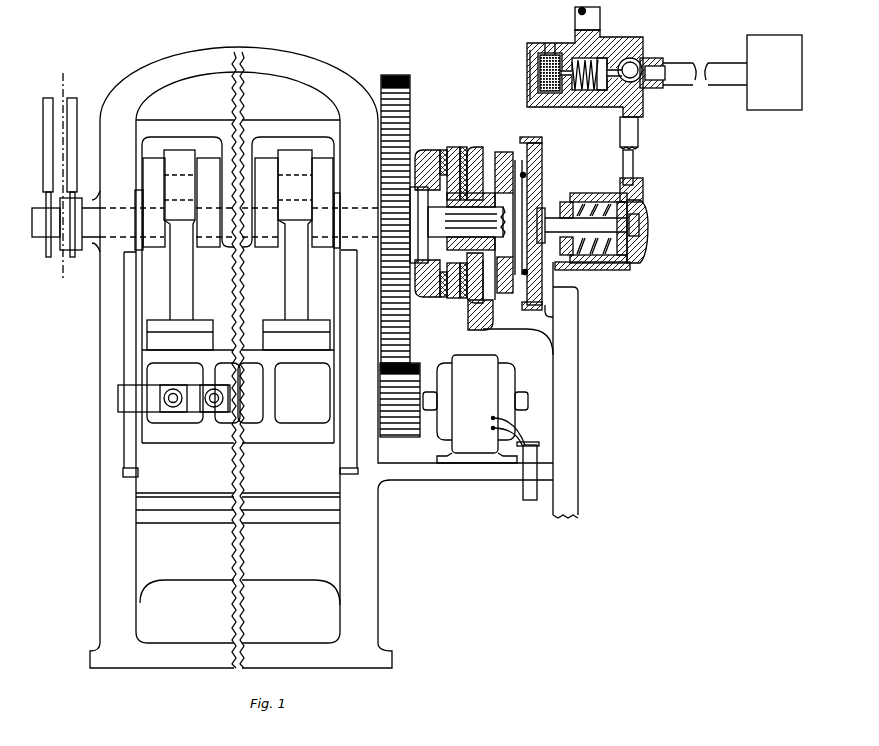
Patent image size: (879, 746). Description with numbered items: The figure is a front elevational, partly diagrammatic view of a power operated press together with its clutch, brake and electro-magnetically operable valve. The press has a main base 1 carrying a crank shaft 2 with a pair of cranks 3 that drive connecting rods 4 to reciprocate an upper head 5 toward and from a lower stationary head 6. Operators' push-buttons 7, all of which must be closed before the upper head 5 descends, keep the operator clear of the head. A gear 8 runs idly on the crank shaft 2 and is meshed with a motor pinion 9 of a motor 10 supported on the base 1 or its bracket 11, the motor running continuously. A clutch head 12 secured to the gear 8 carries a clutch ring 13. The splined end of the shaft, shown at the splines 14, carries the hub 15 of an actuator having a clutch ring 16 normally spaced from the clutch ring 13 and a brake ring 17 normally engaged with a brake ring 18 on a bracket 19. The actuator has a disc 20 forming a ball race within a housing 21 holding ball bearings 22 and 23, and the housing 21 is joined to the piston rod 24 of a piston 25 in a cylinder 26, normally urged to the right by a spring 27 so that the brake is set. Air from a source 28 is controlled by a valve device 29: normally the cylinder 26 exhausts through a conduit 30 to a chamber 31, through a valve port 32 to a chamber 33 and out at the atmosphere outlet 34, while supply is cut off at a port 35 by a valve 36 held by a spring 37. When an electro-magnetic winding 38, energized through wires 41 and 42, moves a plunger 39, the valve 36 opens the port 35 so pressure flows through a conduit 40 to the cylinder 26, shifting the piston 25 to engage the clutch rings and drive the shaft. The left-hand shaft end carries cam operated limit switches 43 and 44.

The main base 1 is at (377, 557).
The crank shaft 2 is at (58, 76).
The cranks 3 is at (196, 189).
The connecting rods 4 is at (193, 277).
The upper head 5 is at (215, 438).
The lower stationary head 6 is at (275, 496).
The operators' push-buttons 7 is at (175, 389).
The gear 8 is at (410, 93).
The motor pinion 9 is at (404, 436).
The motor 10 is at (475, 409).
The bracket 11 is at (487, 477).
The clutch head 12 is at (422, 150).
The clutch ring 13 is at (442, 150).
The splines 14 is at (447, 222).
The hub 15 is at (493, 282).
The clutch ring 16 is at (452, 147).
The brake ring 17 is at (463, 147).
The brake ring 18 is at (476, 148).
The bracket 19 is at (469, 322).
The disc 20 is at (522, 200).
The housing 21 is at (542, 153).
The ball bearing 22 is at (526, 175).
The ball bearing 23 is at (500, 165).
The piston rod 24 is at (551, 218).
The piston 25 is at (640, 204).
The cylinder 26 is at (642, 249).
The spring 27 is at (600, 193).
The source 28 is at (778, 105).
The valve device 29 is at (594, 64).
The conduit 30 is at (639, 134).
The chamber 31 is at (644, 105).
The valve port 32 is at (630, 46).
The chamber 33 is at (600, 93).
The atmosphere outlet 34 is at (600, 22).
The port 35 is at (640, 62).
The valve 36 is at (650, 55).
The spring 37 is at (578, 92).
The electro-magnetic winding 38 is at (540, 106).
The plunger 39 is at (545, 74).
The conduit 40 is at (716, 85).
The wire 41 is at (540, 43).
The wire 42 is at (550, 43).
The cam operated limit switch 43 is at (44, 172).
The cam operated limit switch 44 is at (77, 111).